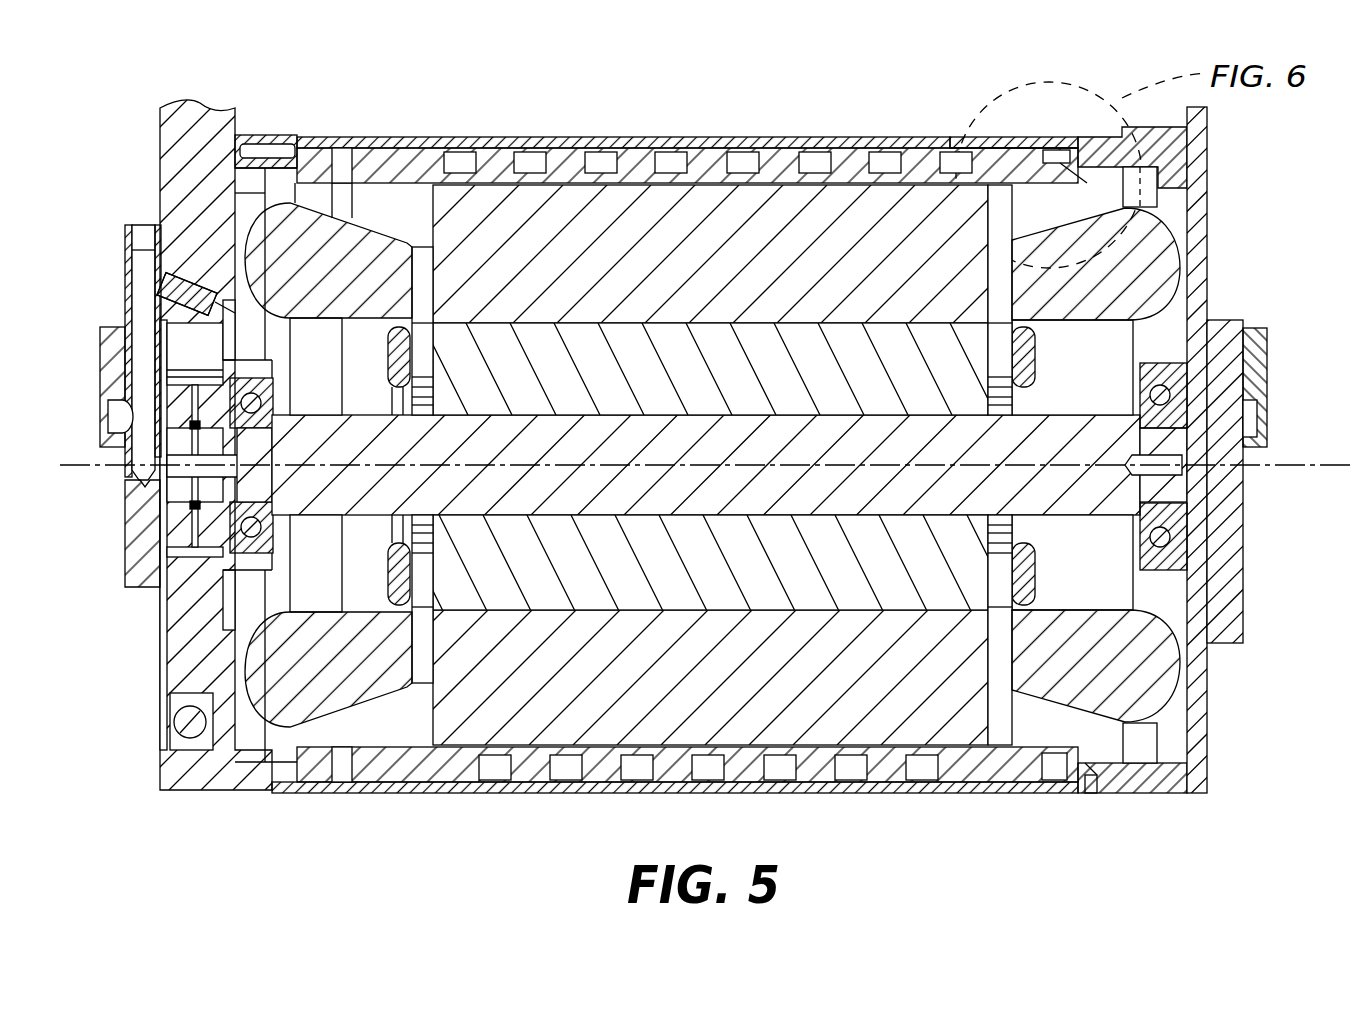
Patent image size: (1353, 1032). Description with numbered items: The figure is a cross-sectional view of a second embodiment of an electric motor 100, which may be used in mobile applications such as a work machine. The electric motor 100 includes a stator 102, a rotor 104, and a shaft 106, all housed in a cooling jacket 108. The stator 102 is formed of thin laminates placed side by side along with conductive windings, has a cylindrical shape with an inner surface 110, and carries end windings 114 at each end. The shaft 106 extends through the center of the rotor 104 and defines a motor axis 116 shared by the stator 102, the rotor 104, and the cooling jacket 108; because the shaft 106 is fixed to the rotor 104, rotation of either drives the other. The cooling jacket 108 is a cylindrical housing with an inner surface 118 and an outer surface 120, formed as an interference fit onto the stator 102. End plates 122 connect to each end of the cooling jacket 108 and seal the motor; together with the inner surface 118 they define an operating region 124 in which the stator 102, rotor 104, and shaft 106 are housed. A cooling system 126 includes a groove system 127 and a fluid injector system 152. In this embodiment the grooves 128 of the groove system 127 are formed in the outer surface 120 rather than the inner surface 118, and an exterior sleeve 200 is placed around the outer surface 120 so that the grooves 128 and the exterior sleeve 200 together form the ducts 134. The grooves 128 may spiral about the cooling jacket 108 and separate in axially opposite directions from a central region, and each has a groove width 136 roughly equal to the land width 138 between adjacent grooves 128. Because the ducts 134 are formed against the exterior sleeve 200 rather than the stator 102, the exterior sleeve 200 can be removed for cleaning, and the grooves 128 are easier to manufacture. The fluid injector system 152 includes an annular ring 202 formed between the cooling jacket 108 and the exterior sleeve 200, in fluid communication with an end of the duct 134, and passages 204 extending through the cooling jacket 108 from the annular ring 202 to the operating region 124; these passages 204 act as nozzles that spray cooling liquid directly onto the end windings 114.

The electric motor 100 is at (1263, 203).
The stator 102 is at (740, 200).
The rotor 104 is at (958, 345).
The shaft 106 is at (1160, 438).
The cooling jacket 108 is at (500, 150).
The inner surface of the stator 110 is at (467, 322).
The end windings 114 is at (1138, 235).
The motor axis 116 is at (1297, 470).
The inner surface of the cooling jacket 118 is at (990, 178).
The outer surface of the cooling jacket 120 is at (632, 147).
The end plates 122 is at (1195, 712).
The operating region 124 is at (1098, 573).
The cooling system 126 is at (983, 85).
The groove system 127 is at (958, 133).
The grooves 128 is at (810, 150).
The ducts 134 is at (637, 770).
The groove width 136 is at (835, 800).
The land width 138 is at (895, 800).
The fluid injector system 152 is at (1068, 123).
The exterior sleeve 200 is at (1020, 793).
The annular ring 202 is at (1068, 780).
The passages 204 is at (1087, 177).